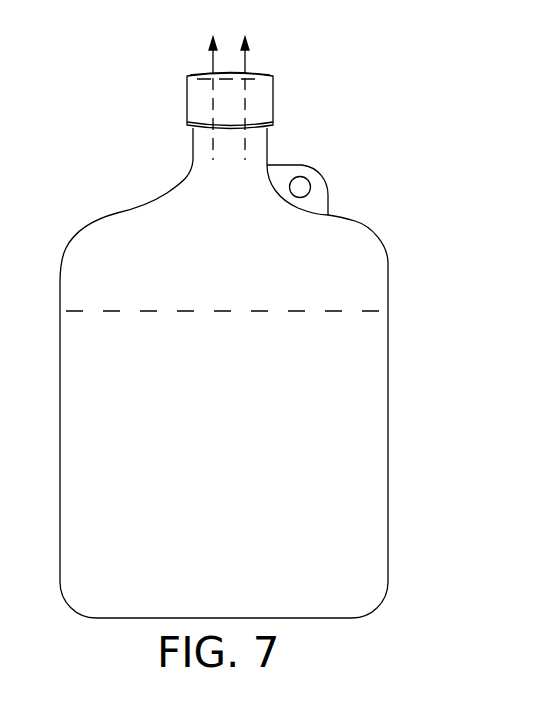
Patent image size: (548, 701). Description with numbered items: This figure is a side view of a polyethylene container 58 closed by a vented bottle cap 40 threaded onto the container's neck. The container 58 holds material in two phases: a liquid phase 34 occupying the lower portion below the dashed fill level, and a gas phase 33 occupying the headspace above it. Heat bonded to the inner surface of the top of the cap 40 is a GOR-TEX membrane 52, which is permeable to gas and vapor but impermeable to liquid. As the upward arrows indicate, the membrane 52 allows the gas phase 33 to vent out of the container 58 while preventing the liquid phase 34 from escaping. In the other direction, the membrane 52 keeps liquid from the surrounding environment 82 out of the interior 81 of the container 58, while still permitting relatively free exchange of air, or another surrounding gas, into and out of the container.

The gas phase 33 is at (212, 60).
The GOR-TEX membrane 52 is at (272, 70).
The bottle cap 40 is at (187, 99).
The surrounding environment 82 is at (373, 122).
The interior 81 is at (333, 247).
The liquid phase 34 is at (283, 428).
The container 58 is at (391, 394).